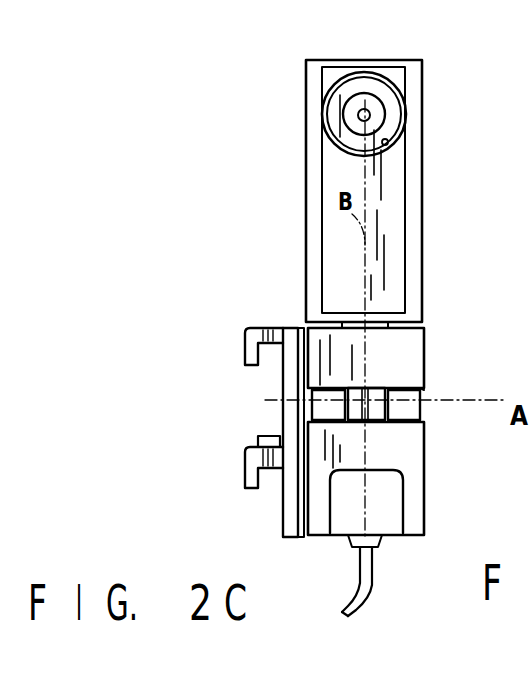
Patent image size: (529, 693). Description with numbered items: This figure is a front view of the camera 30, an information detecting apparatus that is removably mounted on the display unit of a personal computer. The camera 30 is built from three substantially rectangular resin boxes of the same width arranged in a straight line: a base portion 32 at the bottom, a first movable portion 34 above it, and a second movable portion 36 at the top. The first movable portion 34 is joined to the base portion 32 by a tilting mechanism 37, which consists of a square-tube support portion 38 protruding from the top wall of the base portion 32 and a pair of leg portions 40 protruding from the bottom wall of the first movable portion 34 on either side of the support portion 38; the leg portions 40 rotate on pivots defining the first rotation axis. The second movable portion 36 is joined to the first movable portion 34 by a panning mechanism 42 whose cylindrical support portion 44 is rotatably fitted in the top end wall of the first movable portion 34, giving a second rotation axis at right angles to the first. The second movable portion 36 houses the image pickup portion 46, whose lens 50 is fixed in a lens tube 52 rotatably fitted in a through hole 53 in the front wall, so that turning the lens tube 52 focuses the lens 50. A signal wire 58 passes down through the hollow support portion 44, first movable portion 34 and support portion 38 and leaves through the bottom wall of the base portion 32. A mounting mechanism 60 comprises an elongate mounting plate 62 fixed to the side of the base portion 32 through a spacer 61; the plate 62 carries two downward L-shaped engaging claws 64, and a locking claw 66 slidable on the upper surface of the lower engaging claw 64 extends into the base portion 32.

The camera 30 is at (424, 198).
The base portion 32 is at (425, 488).
The first movable portion 34 is at (425, 348).
The second movable portion 36 is at (425, 243).
The tilting mechanism 37 is at (430, 392).
The support portion 38 is at (372, 395).
The leg portions 40 is at (313, 410).
The panning mechanism 42 is at (385, 311).
The cylindrical support portion 44 is at (342, 321).
The image pickup portion 46 is at (407, 103).
The lens 50 is at (357, 114).
The lens tube 52 is at (325, 133).
The through hole 53 is at (389, 142).
The signal wire 58 is at (373, 587).
The mounting mechanism 60 is at (248, 322).
The spacer 61 is at (302, 537).
The mounting plate 62 is at (283, 518).
The engaging claws 64 is at (245, 345).
The locking claw 66 is at (260, 438).